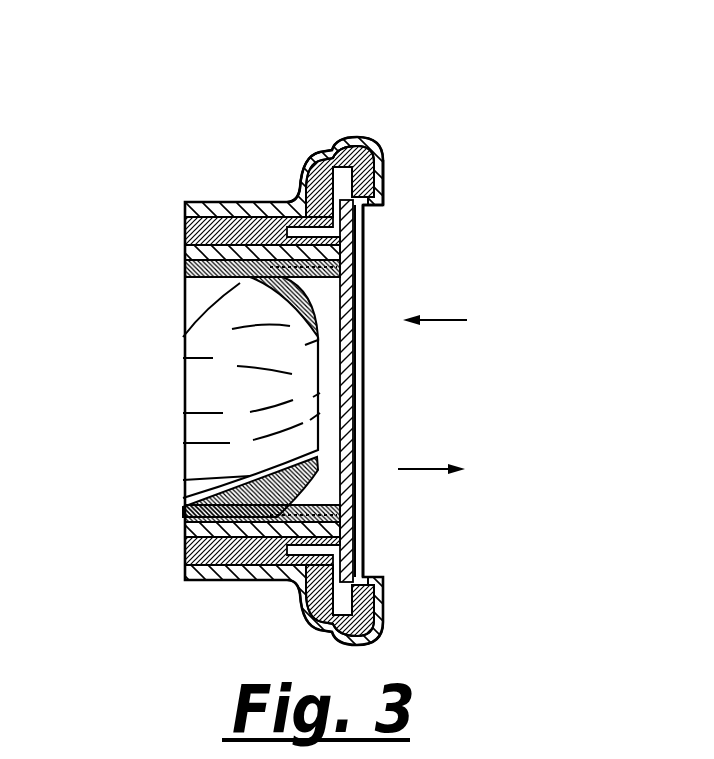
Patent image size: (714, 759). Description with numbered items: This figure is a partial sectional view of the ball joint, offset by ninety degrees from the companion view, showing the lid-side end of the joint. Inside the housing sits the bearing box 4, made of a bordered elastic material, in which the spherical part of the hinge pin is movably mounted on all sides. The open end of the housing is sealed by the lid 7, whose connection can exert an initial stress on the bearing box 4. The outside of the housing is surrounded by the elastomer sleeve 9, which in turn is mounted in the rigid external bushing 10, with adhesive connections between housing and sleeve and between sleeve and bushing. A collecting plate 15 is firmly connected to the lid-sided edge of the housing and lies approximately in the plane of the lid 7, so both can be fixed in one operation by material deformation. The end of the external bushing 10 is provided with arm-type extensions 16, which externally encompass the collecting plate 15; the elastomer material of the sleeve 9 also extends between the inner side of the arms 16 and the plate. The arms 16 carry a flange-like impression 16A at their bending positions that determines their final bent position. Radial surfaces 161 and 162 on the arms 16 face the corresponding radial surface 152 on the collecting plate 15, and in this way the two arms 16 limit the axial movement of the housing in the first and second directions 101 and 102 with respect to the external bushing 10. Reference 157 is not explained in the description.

The external bushing 10 is at (200, 207).
The elastomer sleeve 9 is at (183, 220).
The bearing box 4 is at (183, 333).
The lid 7 is at (380, 352).
The collecting plate 15 is at (370, 232).
The arm-type extensions 16 is at (378, 142).
The flange-like impression 16A is at (330, 145).
The groove 157 is at (292, 172).
The first radial surface of the arms 161 is at (297, 187).
The second radial surface of the collecting plate 152 is at (386, 190).
The second radial surface of the arms 162 is at (386, 201).
The first direction 101 is at (467, 320).
The second direction 102 is at (427, 468).